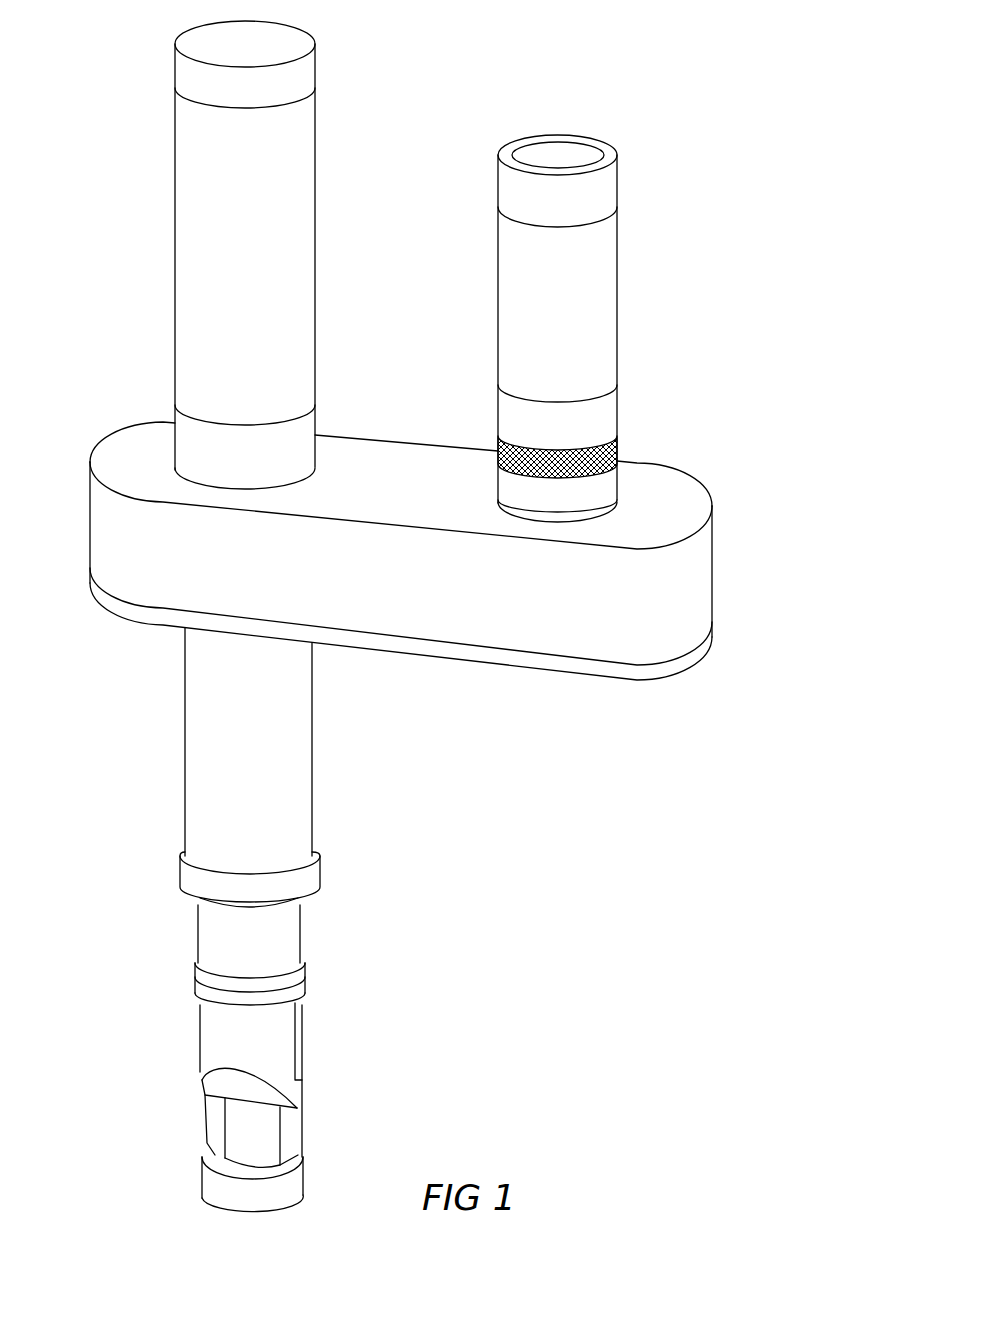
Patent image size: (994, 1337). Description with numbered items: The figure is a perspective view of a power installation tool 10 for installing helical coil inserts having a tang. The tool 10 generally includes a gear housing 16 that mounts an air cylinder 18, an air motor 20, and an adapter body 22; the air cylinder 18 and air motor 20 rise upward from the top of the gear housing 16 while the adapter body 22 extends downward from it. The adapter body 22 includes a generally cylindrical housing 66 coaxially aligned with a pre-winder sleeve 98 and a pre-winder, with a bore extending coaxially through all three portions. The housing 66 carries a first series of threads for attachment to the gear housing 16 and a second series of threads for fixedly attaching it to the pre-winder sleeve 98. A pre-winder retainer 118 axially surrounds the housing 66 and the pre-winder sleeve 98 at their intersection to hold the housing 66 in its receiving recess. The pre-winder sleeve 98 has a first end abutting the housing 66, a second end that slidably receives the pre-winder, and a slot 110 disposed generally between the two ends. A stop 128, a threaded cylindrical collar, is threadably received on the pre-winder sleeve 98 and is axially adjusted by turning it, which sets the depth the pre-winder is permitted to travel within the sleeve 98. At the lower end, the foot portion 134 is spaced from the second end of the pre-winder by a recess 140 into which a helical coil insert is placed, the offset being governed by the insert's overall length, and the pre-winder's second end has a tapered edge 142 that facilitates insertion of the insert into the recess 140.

The power installation tool 10 is at (742, 73).
The gear housing 16 is at (707, 557).
The air cylinder 18 is at (183, 172).
The air motor 20 is at (614, 298).
The adapter body 22 is at (157, 712).
The housing 66 is at (304, 739).
The pre-winder sleeve 98 is at (203, 940).
The slot 110 is at (298, 1045).
The pre-winder retainer 118 is at (325, 872).
The stop 128 is at (308, 981).
The foot portion 134 is at (302, 1182).
The recess 140 is at (245, 1147).
The tapered edge 142 is at (225, 1085).